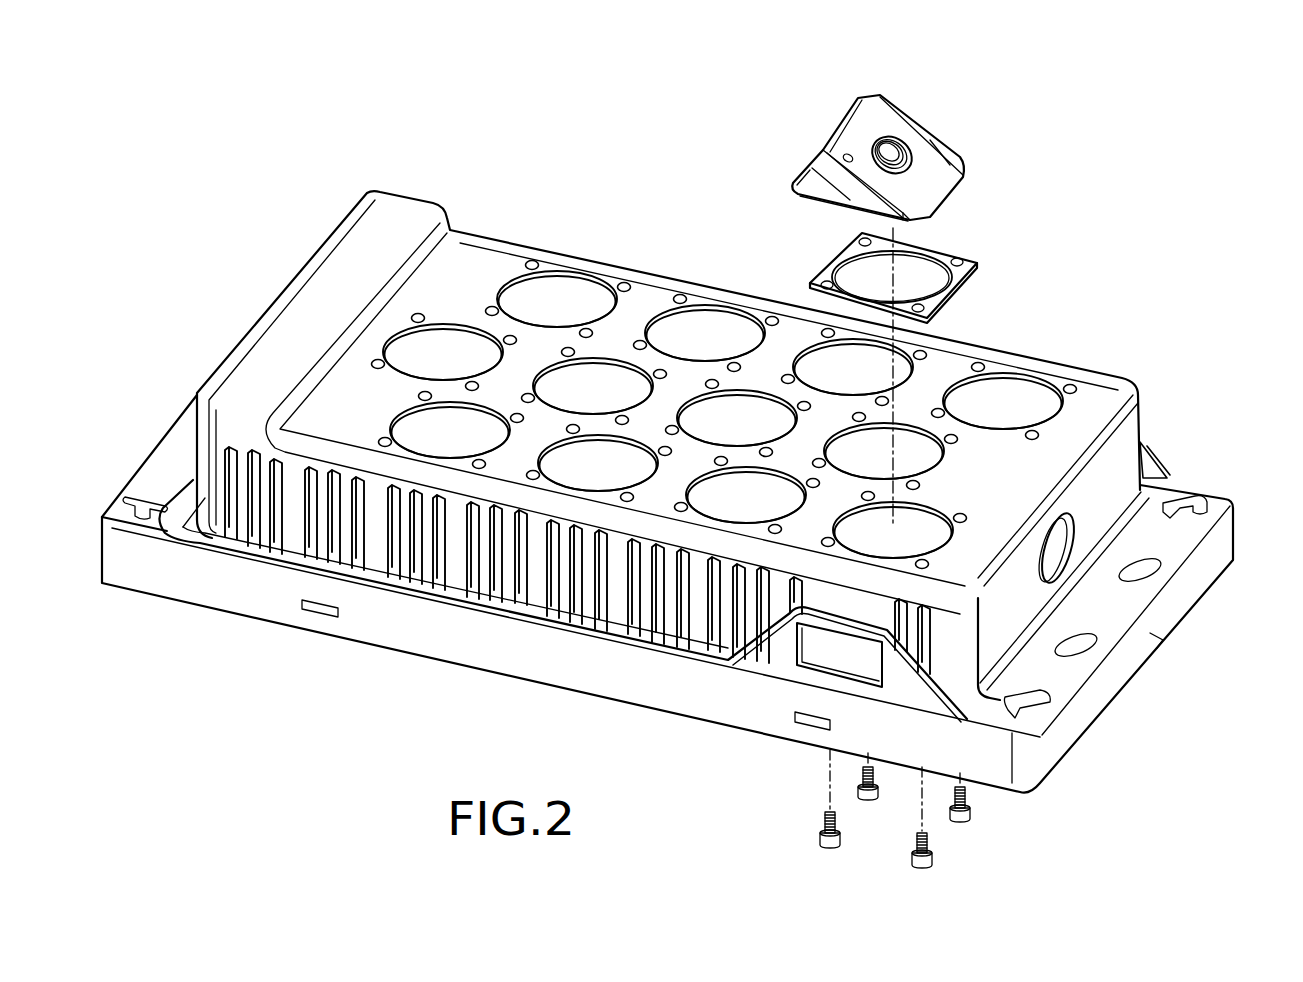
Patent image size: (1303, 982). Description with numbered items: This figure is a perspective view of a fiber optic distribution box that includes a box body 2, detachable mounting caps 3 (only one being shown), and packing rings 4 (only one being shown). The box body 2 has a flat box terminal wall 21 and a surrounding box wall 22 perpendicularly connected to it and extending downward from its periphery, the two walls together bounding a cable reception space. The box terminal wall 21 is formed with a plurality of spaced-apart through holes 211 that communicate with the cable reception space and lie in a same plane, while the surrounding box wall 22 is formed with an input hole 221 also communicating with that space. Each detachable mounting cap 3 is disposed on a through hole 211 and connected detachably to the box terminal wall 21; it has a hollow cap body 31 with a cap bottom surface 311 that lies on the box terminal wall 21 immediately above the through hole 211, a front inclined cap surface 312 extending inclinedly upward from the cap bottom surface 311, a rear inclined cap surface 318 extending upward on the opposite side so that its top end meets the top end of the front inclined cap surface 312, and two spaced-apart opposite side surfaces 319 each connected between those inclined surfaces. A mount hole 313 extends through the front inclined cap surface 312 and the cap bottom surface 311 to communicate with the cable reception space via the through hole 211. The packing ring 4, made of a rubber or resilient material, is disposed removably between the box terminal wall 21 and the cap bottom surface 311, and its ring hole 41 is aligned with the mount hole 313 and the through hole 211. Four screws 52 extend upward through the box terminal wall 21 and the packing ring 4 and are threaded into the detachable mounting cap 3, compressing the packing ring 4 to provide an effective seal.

The box body 2 is at (1147, 428).
The box terminal wall 21 is at (1098, 393).
The through holes 211 is at (582, 292).
The surrounding box wall 22 is at (1018, 630).
The input hole 221 is at (1060, 573).
The detachable mounting cap 3 is at (983, 168).
The hollow cap body 31 is at (836, 137).
The cap bottom surface 311 is at (820, 210).
The front inclined cap surface 312 is at (940, 148).
The mount hole 313 is at (905, 142).
The rear inclined cap surface 318 is at (812, 155).
The side surfaces 319 is at (827, 188).
The packing ring 4 is at (963, 278).
The ring hole 41 is at (921, 266).
The screws 52 is at (932, 860).